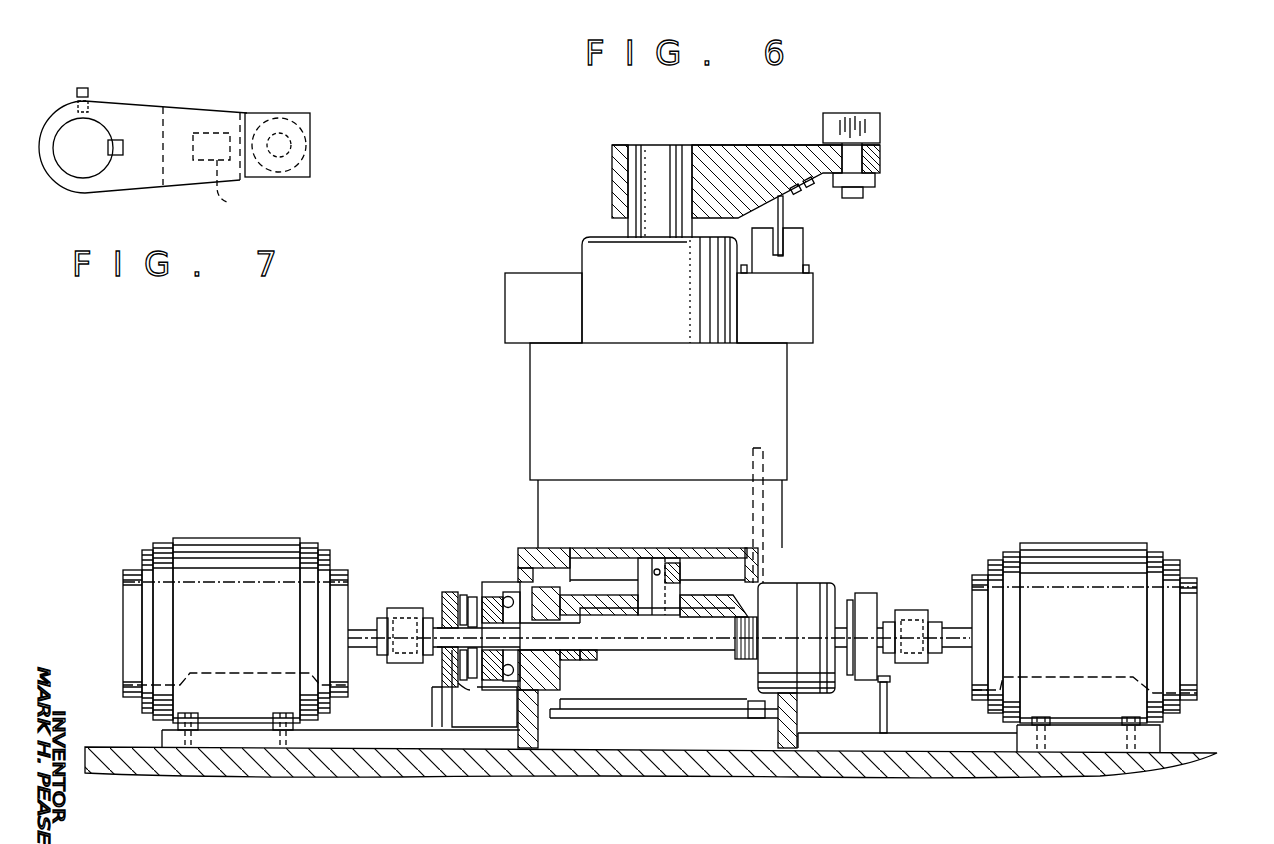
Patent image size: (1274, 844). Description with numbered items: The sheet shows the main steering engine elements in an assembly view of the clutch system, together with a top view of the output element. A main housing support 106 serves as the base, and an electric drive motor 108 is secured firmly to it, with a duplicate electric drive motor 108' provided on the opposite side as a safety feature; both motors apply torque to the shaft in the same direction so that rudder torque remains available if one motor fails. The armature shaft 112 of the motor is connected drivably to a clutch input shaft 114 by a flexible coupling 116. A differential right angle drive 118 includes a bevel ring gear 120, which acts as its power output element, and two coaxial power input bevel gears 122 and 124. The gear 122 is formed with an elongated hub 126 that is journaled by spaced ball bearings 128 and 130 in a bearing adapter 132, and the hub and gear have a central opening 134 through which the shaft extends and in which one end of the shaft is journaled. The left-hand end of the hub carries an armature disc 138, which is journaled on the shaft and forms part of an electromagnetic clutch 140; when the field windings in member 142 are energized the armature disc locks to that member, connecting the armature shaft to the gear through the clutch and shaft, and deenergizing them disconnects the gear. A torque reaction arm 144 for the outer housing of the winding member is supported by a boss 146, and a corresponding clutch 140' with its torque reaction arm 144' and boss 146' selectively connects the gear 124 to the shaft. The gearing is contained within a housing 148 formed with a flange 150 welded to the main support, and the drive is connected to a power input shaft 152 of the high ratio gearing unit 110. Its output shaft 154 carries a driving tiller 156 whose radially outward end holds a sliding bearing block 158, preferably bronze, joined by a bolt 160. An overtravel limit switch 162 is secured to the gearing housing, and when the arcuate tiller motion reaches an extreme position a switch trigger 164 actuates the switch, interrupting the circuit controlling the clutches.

In FIG. 6, the main housing support 106 is at (383, 737).
In FIG. 6, the electric drive motor 108 is at (321, 624).
In FIG. 6, the duplicate electric drive motor 108' is at (997, 630).
In FIG. 6, the high ratio gearing unit 110 is at (530, 423).
In FIG. 6, the armature shaft 112 is at (363, 630).
In FIG. 6, the clutch input shaft 114 is at (460, 573).
In FIG. 6, the flexible coupling 116 is at (398, 613).
In FIG. 6, the differential right angle drive 118 is at (688, 590).
In FIG. 6, the bevel ring gear 120 is at (612, 597).
In FIG. 6, the power input bevel gear 122 is at (590, 657).
In FIG. 6, the power input bevel gear 124 is at (743, 660).
In FIG. 6, the elongated hub 126 is at (545, 612).
In FIG. 6, the ball bearing 128 is at (565, 662).
In FIG. 6, the ball bearing 130 is at (508, 580).
In FIG. 6, the bearing adapter 132 is at (547, 590).
In FIG. 6, the central opening 134 is at (567, 625).
In FIG. 6, the armature disc 138 is at (473, 672).
In FIG. 6, the electromagnetic clutch 140 is at (469, 583).
In FIG. 6, the electromagnetic clutch 140' is at (864, 607).
In FIG. 6, the field winding member 142 is at (438, 605).
In FIG. 6, the torque reaction arm 144 is at (406, 698).
In FIG. 6, the torque reaction arm 144' is at (914, 689).
In FIG. 6, the boss 146 is at (480, 735).
In FIG. 6, the boss 146' is at (918, 707).
In FIG. 6, the housing 148 is at (770, 418).
In FIG. 6, the flange 150 is at (782, 563).
In FIG. 6, the power input shaft 152 is at (657, 560).
In FIG. 7, the output shaft 154 is at (75, 160).
In FIG. 6, the output shaft 154 is at (672, 128).
In FIG. 7, the driving tiller 156 is at (140, 115).
In FIG. 6, the driving tiller 156 is at (737, 163).
In FIG. 7, the sliding bearing block 158 is at (293, 160).
In FIG. 6, the sliding bearing block 158 is at (877, 135).
In FIG. 7, the bolt 160 is at (282, 147).
In FIG. 6, the bolt 160 is at (852, 162).
In FIG. 6, the overtravel limit switch 162 is at (797, 255).
In FIG. 7, the switch trigger 164 is at (234, 178).
In FIG. 6, the switch trigger 164 is at (783, 213).